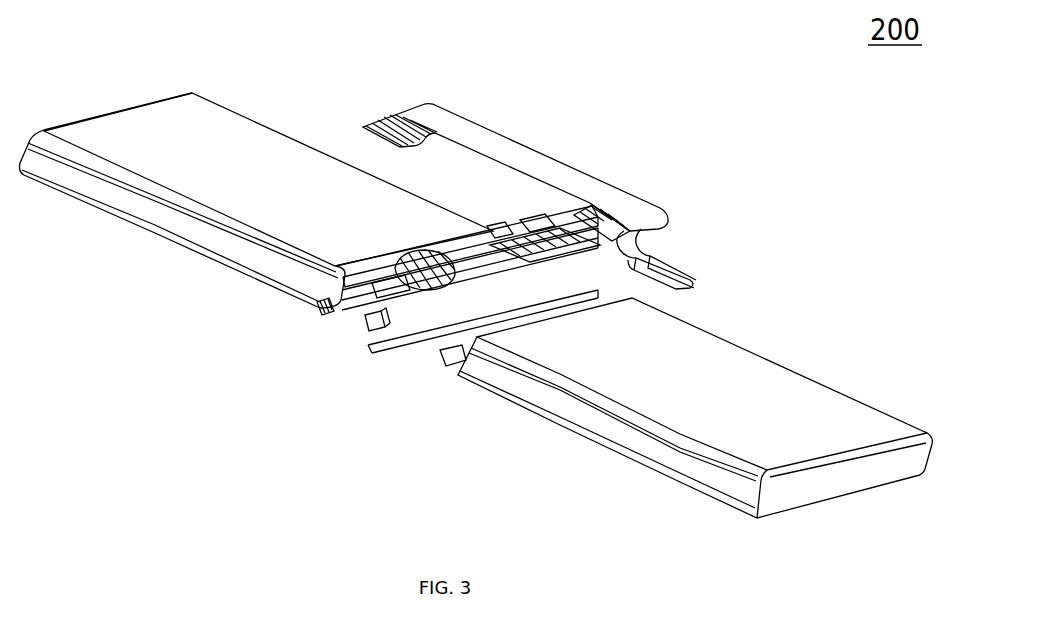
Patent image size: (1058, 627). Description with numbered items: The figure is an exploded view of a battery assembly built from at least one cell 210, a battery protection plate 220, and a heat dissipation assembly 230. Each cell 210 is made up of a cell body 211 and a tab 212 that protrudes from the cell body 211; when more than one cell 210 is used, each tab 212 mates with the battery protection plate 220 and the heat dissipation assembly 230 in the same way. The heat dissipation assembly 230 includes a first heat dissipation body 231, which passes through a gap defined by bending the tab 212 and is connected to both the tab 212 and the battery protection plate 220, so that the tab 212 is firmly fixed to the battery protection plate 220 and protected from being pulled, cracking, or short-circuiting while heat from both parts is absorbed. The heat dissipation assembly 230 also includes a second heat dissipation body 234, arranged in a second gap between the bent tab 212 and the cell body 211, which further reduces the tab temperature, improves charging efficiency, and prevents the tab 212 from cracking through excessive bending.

The cell 210 is at (478, 266).
The cell body 211 is at (290, 155).
The tab 212 is at (322, 311).
The battery protection plate 220 is at (498, 130).
The heat dissipation assembly 230 is at (446, 334).
The first heat dissipation body 231 is at (427, 310).
The second heat dissipation body 234 is at (367, 329).